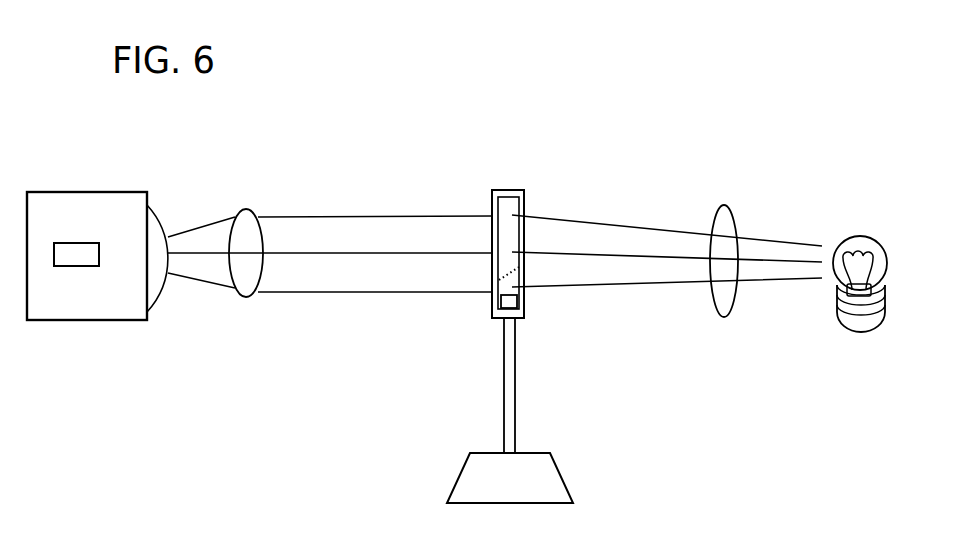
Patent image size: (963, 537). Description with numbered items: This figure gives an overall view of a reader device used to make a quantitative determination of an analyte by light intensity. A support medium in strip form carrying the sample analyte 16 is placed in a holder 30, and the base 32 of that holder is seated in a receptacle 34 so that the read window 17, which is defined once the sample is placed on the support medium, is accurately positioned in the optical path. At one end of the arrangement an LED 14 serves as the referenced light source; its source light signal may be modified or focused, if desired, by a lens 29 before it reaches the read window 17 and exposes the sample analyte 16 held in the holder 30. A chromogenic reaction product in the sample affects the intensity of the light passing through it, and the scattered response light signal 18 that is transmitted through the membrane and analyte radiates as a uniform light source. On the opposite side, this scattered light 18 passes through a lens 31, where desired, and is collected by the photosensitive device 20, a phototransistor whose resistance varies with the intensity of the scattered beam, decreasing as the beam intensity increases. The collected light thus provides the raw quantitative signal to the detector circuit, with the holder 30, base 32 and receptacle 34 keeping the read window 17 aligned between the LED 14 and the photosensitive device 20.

The LED 14 is at (877, 255).
The sample analyte 16 is at (513, 213).
The read window 17 is at (495, 265).
The scattered response light signal 18 is at (358, 230).
The photosensitive device 20 is at (107, 193).
The lens 29 is at (723, 203).
The holder 30 is at (518, 320).
The lens 31 is at (245, 213).
The base 32 is at (515, 388).
The receptacle 34 is at (562, 475).